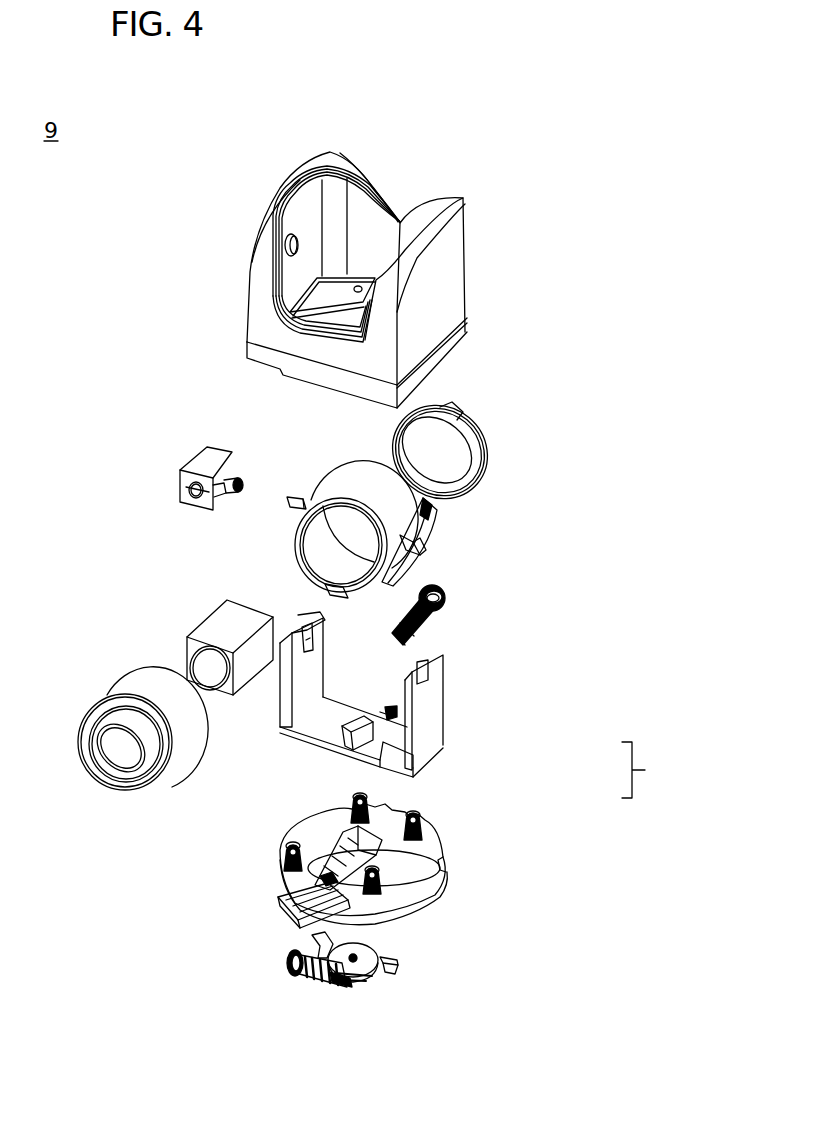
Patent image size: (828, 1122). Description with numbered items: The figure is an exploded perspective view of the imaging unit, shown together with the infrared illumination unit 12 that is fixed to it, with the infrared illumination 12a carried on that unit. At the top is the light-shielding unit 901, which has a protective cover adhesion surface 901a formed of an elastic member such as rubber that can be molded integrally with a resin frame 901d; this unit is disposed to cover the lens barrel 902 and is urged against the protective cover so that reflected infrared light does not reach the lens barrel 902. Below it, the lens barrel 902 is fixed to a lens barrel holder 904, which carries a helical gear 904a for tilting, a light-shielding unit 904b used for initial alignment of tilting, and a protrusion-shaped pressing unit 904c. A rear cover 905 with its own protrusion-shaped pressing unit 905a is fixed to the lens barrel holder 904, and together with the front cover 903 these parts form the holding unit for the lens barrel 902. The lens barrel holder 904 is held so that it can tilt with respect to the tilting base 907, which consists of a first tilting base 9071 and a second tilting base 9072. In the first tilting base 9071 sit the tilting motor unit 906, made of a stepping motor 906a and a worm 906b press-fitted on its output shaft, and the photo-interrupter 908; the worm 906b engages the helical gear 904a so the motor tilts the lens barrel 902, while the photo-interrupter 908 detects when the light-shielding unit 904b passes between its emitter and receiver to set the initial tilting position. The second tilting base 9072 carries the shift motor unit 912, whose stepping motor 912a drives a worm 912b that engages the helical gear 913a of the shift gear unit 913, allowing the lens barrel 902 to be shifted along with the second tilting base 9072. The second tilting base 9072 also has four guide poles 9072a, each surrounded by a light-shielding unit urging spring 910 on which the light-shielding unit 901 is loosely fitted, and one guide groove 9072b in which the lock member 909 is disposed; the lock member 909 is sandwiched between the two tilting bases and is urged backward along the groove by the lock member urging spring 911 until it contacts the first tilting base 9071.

The light-shielding unit 901 is at (455, 264).
The protective cover adhesion surface 901a is at (302, 178).
The frame 901d is at (333, 208).
The infrared illumination unit 12 is at (200, 462).
The infrared illumination 12a is at (190, 490).
The lens barrel holder 904 is at (355, 485).
The helical gear 904a is at (440, 578).
The light-shielding unit 904b is at (445, 527).
The pressing unit 904c is at (300, 583).
The rear cover 905 is at (480, 440).
The pressing unit 905a is at (468, 412).
The lens barrel 902 is at (222, 625).
The front cover 903 is at (95, 715).
The tilting motor unit 906 is at (432, 618).
The stepping motor 906a is at (445, 602).
The worm 906b is at (422, 633).
The tilting base 907 is at (428, 811).
The first tilting base 9071 is at (398, 724).
The second tilting base 9072 is at (369, 885).
The guide pole 9072a is at (350, 805).
The guide groove 9072b is at (430, 865).
The photo-interrupter 908 is at (387, 709).
The lock member 909 is at (430, 882).
The light-shielding unit urging spring 910 is at (345, 815).
The lock member urging spring 911 is at (290, 888).
The shift motor unit 912 is at (300, 985).
The stepping motor 912a is at (295, 962).
The worm 912b is at (332, 985).
The shift gear unit 913 is at (385, 985).
The helical gear 913a is at (355, 985).